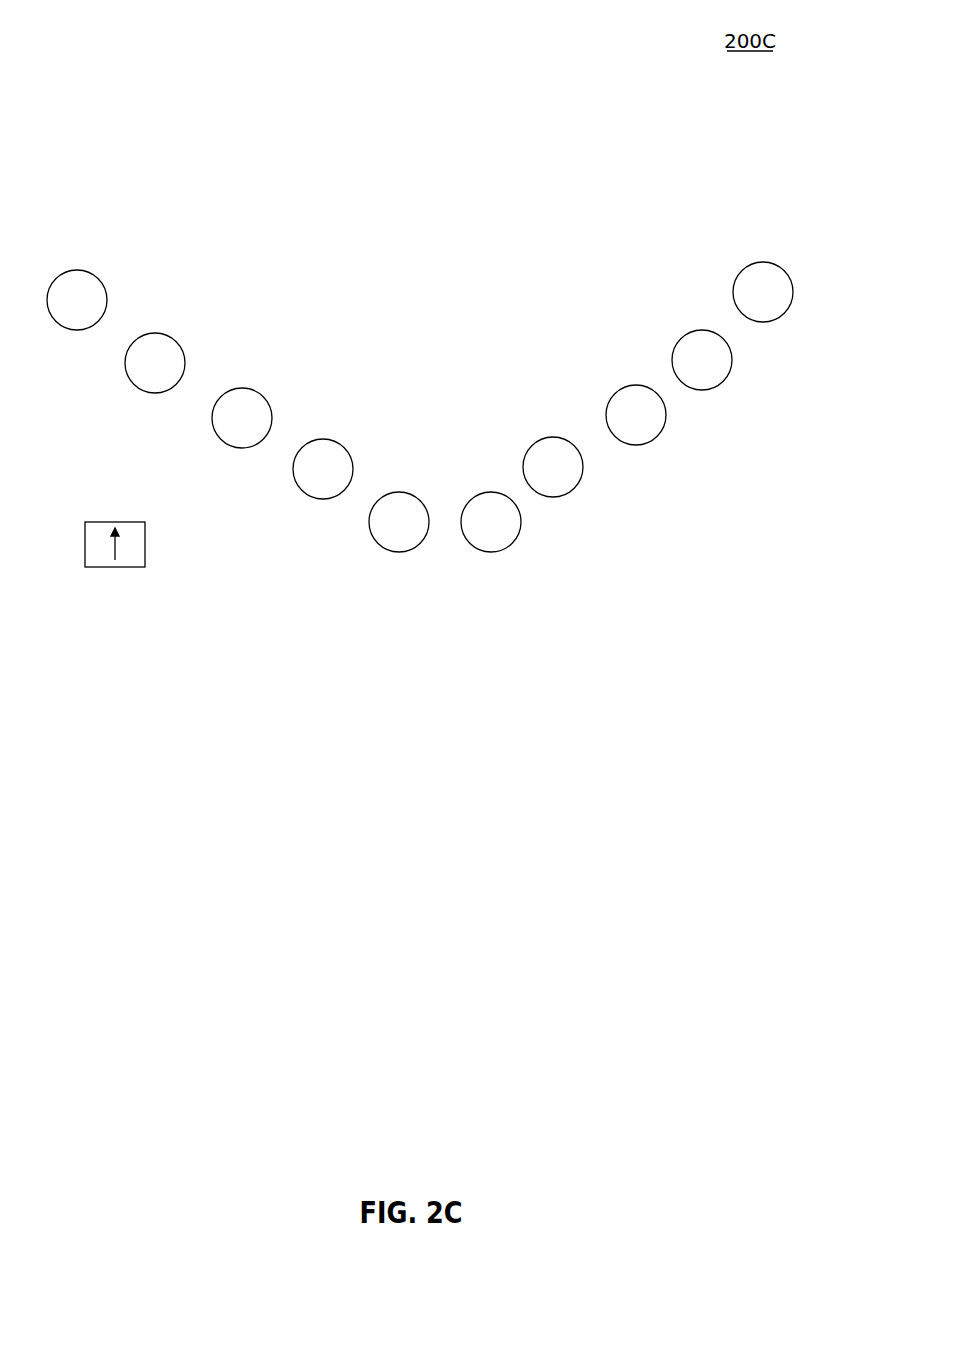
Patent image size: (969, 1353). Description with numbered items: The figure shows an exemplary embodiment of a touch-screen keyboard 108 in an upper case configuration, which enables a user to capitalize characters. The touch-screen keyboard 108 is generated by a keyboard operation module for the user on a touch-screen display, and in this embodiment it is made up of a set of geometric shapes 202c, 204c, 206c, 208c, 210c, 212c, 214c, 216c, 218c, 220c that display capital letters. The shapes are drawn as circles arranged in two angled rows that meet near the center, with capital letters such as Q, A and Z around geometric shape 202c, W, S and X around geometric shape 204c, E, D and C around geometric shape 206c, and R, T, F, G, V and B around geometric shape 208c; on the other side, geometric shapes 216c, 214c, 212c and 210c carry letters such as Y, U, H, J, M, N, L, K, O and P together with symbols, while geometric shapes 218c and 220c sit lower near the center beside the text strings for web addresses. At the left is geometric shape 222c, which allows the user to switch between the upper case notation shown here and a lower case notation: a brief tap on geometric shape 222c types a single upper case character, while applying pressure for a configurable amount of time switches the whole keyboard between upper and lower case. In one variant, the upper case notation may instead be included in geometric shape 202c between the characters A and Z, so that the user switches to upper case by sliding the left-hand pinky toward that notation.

The geometric shape 202c is at (93, 273).
The geometric shape 204c is at (177, 337).
The geometric shape 206c is at (265, 395).
The geometric shape 208c is at (352, 450).
The geometric shape 210c is at (742, 267).
The geometric shape 212c is at (683, 335).
The geometric shape 214c is at (617, 393).
The geometric shape 216c is at (548, 437).
The geometric shape 218c is at (378, 545).
The geometric shape 220c is at (520, 520).
The geometric shape 222c is at (147, 540).
The touch-screen keyboard 108 is at (175, 592).